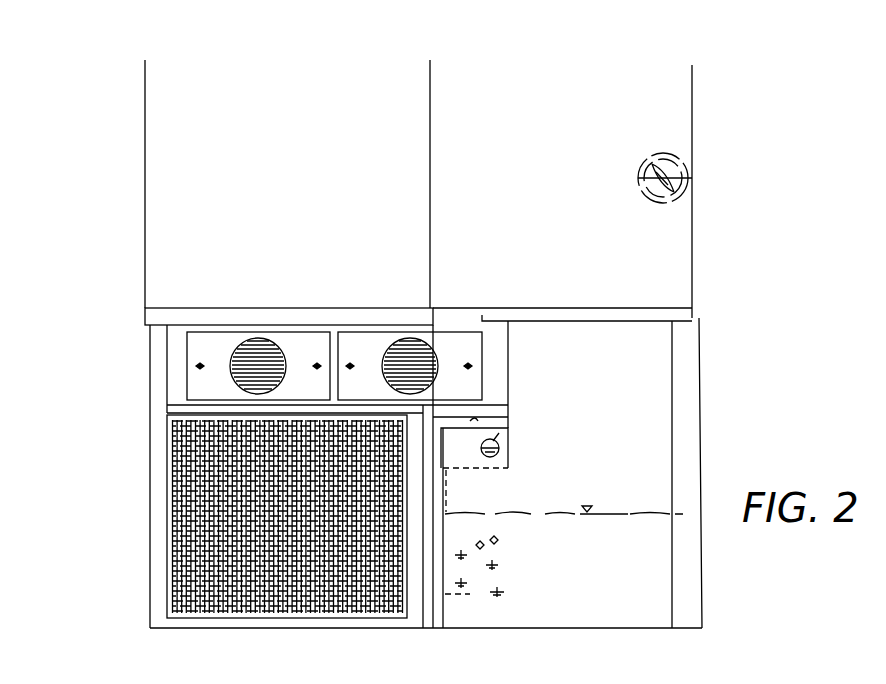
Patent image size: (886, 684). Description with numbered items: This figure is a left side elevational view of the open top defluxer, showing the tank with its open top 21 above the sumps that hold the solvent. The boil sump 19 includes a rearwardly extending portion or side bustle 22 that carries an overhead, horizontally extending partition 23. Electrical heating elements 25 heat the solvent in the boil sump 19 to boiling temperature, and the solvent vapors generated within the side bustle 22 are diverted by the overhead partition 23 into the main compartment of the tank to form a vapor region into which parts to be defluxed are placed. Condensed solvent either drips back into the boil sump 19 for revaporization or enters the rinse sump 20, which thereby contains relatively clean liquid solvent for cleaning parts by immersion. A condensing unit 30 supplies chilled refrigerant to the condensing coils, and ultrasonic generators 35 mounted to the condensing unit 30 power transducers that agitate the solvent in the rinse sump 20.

The open top 21 is at (578, 32).
The ultrasonic generators 35 is at (360, 352).
The condensing unit 30 is at (95, 574).
The side bustle 22 is at (458, 500).
The overhead partition 23 is at (512, 446).
The rinse sump 20 is at (530, 514).
The boil sump 19 is at (599, 592).
The electrical heating elements 25 is at (505, 590).